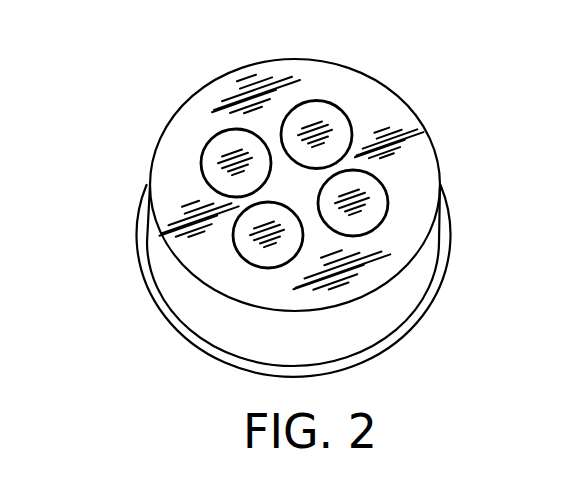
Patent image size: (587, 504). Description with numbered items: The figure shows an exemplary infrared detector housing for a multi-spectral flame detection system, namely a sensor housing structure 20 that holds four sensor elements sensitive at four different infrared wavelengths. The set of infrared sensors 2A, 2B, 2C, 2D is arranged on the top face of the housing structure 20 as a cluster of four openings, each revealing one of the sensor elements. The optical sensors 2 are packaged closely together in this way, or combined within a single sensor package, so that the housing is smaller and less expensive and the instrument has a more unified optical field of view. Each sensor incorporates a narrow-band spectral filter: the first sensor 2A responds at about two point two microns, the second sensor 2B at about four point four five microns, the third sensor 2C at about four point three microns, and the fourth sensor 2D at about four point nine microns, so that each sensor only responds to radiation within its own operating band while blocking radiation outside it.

The optical sensors 2 is at (146, 68).
The sensor housing structure 20 is at (173, 192).
The infrared sensor 2A is at (220, 165).
The infrared sensor 2B is at (325, 112).
The infrared sensor 2C is at (263, 233).
The infrared sensor 2D is at (370, 197).